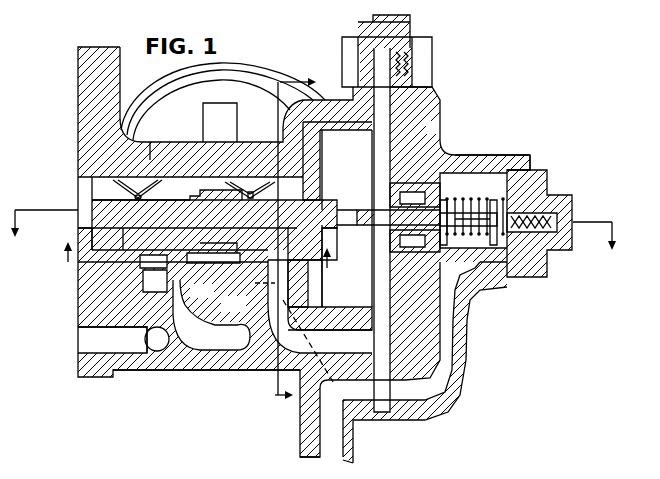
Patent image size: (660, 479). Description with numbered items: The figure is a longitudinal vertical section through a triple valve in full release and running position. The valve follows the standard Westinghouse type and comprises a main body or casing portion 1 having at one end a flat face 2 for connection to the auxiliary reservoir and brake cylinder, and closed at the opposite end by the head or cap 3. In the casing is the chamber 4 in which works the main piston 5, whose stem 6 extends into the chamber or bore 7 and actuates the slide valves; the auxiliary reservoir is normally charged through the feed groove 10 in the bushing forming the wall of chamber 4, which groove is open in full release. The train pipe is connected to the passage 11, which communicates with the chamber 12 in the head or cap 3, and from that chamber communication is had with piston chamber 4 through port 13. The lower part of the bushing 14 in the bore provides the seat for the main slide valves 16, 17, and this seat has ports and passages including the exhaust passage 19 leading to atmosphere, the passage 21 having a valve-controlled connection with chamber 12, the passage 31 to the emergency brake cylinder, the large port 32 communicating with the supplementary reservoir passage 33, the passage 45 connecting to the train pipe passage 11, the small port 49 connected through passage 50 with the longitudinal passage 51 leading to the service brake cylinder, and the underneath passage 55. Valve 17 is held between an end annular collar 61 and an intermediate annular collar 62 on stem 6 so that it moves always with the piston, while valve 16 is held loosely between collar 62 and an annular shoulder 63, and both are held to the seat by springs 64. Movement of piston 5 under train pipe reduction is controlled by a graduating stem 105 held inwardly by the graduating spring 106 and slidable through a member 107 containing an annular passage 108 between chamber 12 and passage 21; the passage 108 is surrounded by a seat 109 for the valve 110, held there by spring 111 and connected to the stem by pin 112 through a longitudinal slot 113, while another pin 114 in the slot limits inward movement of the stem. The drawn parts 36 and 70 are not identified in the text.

The main body or casing portion 1 is at (212, 373).
The flat face 2 is at (78, 138).
The head or cap 3 is at (430, 134).
The chamber 4 is at (347, 218).
The main piston 5 is at (318, 170).
The stem 6 is at (175, 197).
The chamber or bore 7 is at (224, 222).
The feed groove 10 is at (325, 133).
The passage 11 is at (326, 431).
The chamber 12 is at (465, 238).
The port 13 is at (447, 157).
The bushing 14 is at (88, 166).
The main slide valve 16 is at (378, 248).
The main slide valve 17 is at (92, 240).
The transverse passage 19 is at (238, 267).
The passage 21 is at (320, 307).
The passage 31 is at (211, 315).
The large port 32 is at (153, 262).
The passage 33 is at (155, 281).
The port 36 is at (157, 339).
The passage 45 is at (305, 410).
The small port 49 is at (85, 278).
The passage 50 is at (120, 290).
The longitudinal passage 51 is at (112, 340).
The underneath passage 55 is at (222, 275).
The end annular collar 61 is at (85, 232).
The intermediate annular collar 62 is at (204, 222).
The annular shoulder 63 is at (317, 232).
The springs 64 is at (150, 158).
The spring washer 70 is at (122, 228).
The graduating stem 105 is at (360, 208).
The graduating spring 106 is at (553, 249).
The member 107 is at (378, 258).
The annular passage 108 is at (425, 362).
The seat 109 is at (505, 172).
The valve 110 is at (486, 160).
The spring 111 is at (523, 160).
The pin 112 is at (447, 222).
The longitudinal slot 113 is at (481, 238).
The pin 114 is at (535, 193).